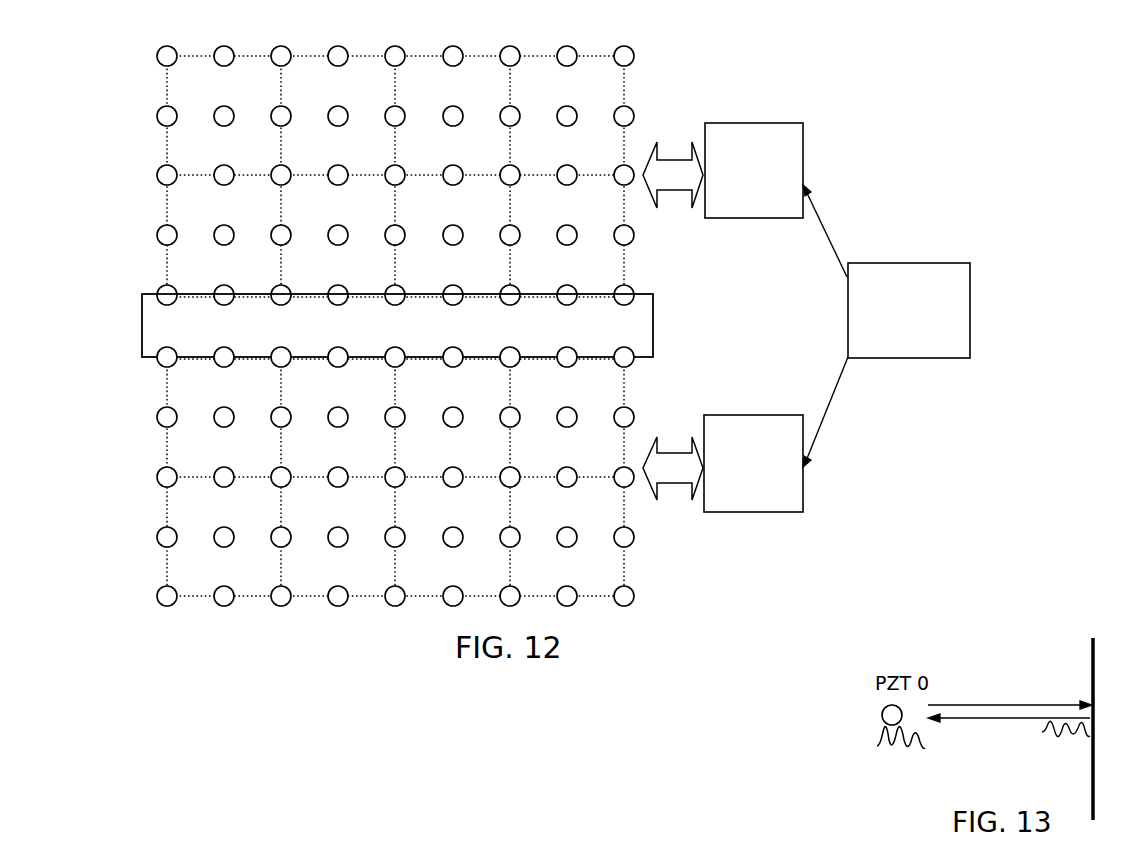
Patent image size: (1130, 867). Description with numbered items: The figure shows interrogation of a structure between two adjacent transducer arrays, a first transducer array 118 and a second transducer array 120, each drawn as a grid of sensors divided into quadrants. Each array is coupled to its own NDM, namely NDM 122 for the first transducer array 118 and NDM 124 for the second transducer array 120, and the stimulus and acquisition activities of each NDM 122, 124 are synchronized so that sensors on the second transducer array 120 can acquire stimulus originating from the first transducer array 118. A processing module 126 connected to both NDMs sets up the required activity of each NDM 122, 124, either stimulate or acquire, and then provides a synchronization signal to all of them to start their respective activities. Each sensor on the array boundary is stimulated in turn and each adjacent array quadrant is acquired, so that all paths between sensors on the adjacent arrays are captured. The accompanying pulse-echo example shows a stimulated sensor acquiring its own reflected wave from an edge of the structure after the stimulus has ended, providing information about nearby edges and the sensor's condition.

The first transducer array 118 is at (125, 233).
The second transducer array 120 is at (125, 542).
The NDM 122 is at (791, 208).
The NDM 124 is at (791, 499).
The processing module 126 is at (955, 349).